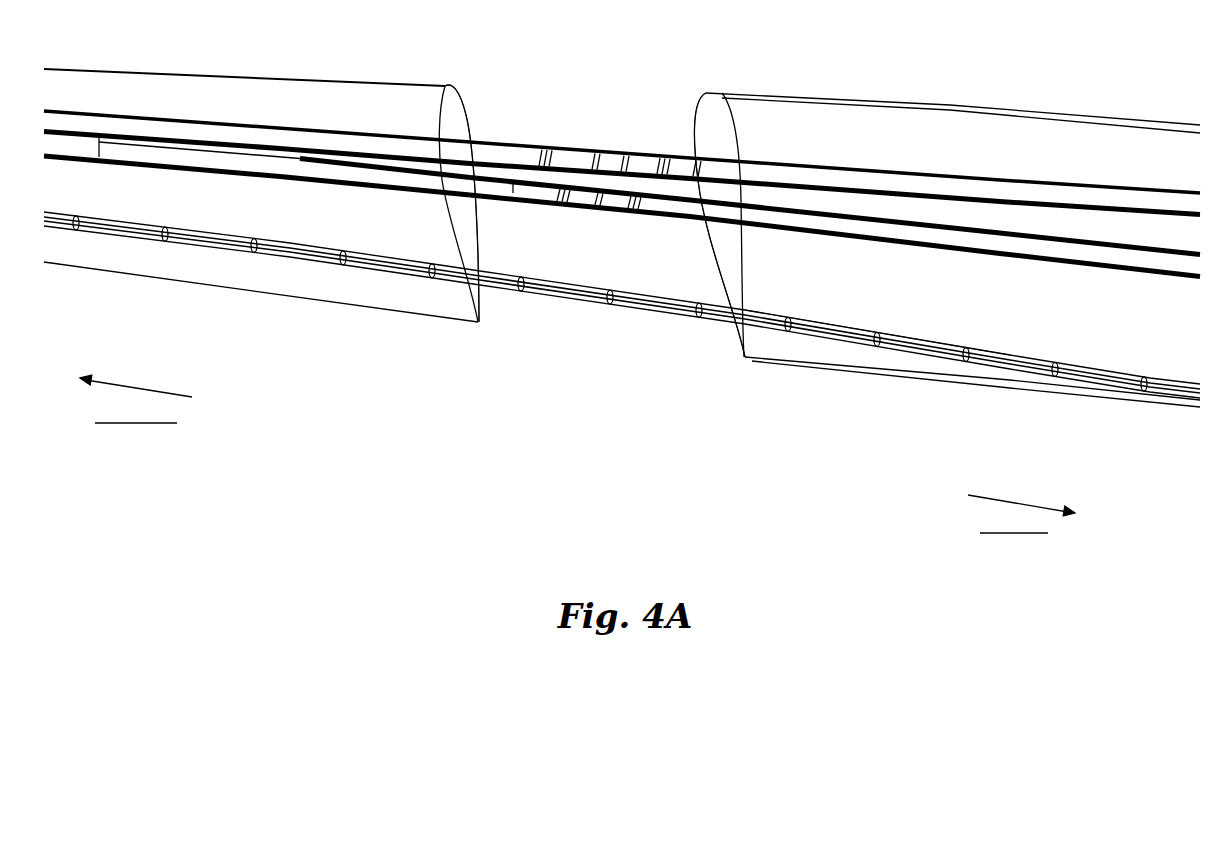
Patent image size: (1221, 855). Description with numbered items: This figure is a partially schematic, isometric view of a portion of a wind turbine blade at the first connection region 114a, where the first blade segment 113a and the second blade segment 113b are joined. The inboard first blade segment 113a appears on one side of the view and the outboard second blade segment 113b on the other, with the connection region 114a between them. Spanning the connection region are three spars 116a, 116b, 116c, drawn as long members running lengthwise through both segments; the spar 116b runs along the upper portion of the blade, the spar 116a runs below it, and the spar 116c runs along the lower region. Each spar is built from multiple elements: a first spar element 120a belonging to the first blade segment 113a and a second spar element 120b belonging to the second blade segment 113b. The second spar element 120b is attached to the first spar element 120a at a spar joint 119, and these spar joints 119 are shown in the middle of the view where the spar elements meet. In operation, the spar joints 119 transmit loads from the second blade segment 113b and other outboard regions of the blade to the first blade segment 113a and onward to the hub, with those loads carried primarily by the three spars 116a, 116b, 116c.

The first blade segment 113a is at (1076, 428).
The second blade segment 113b is at (204, 310).
The first connection region 114a is at (503, 92).
The spar 116a is at (663, 216).
The spar 116b is at (822, 162).
The spar 116c is at (540, 292).
The spar joint 119 is at (646, 182).
The first spar element 120a is at (940, 217).
The second spar element 120b is at (406, 178).